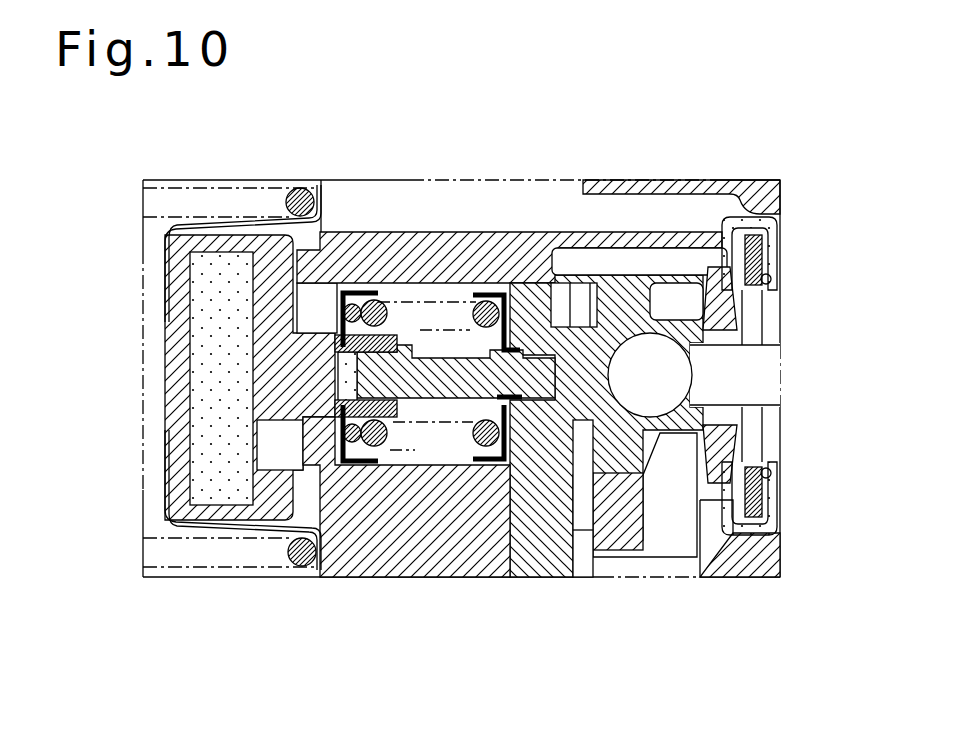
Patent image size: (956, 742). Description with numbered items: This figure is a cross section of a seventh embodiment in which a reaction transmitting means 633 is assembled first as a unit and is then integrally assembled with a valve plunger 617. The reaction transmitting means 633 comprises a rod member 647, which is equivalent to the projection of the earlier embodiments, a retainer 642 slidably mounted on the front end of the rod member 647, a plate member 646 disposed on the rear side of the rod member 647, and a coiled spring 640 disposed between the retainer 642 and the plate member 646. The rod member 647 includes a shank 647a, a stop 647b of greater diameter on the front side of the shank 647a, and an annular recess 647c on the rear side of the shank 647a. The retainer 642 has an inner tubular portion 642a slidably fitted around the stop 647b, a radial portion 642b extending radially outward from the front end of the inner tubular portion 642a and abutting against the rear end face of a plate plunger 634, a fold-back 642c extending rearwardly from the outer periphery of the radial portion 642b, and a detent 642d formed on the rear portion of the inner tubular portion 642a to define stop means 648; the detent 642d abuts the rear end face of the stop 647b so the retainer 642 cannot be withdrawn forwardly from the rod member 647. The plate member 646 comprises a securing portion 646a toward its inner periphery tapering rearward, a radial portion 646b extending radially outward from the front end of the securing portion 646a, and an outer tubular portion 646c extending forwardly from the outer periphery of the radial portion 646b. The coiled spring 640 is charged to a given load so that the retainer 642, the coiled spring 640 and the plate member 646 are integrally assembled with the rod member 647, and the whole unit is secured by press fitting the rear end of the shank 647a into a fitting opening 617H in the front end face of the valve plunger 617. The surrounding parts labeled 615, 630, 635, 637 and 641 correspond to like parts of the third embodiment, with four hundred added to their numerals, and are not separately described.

The seal member 615 is at (772, 299).
The valve plunger 617 is at (680, 430).
The fitting opening 617H is at (545, 530).
The output shaft 630 is at (768, 383).
The reaction transmitting means 633 is at (413, 284).
The plate plunger 634 is at (335, 350).
The permanent magnet 635 is at (200, 452).
The yoke 637 is at (160, 390).
The coiled spring 640 is at (470, 451).
The core 641 is at (345, 374).
The retainer 642 is at (317, 188).
The inner tubular portion 642a is at (372, 470).
The radial portion 642b is at (337, 452).
The fold-back 642c is at (348, 468).
The detent 642d is at (382, 404).
The plate member 646 is at (517, 330).
The securing portion 646a is at (546, 247).
The radial portion 646b is at (542, 425).
The outer tubular portion 646c is at (496, 470).
The rod member 647 is at (414, 340).
The shank 647a is at (439, 347).
The stop 647b is at (331, 290).
The annular recess 647c is at (503, 399).
The stop means 648 is at (368, 332).